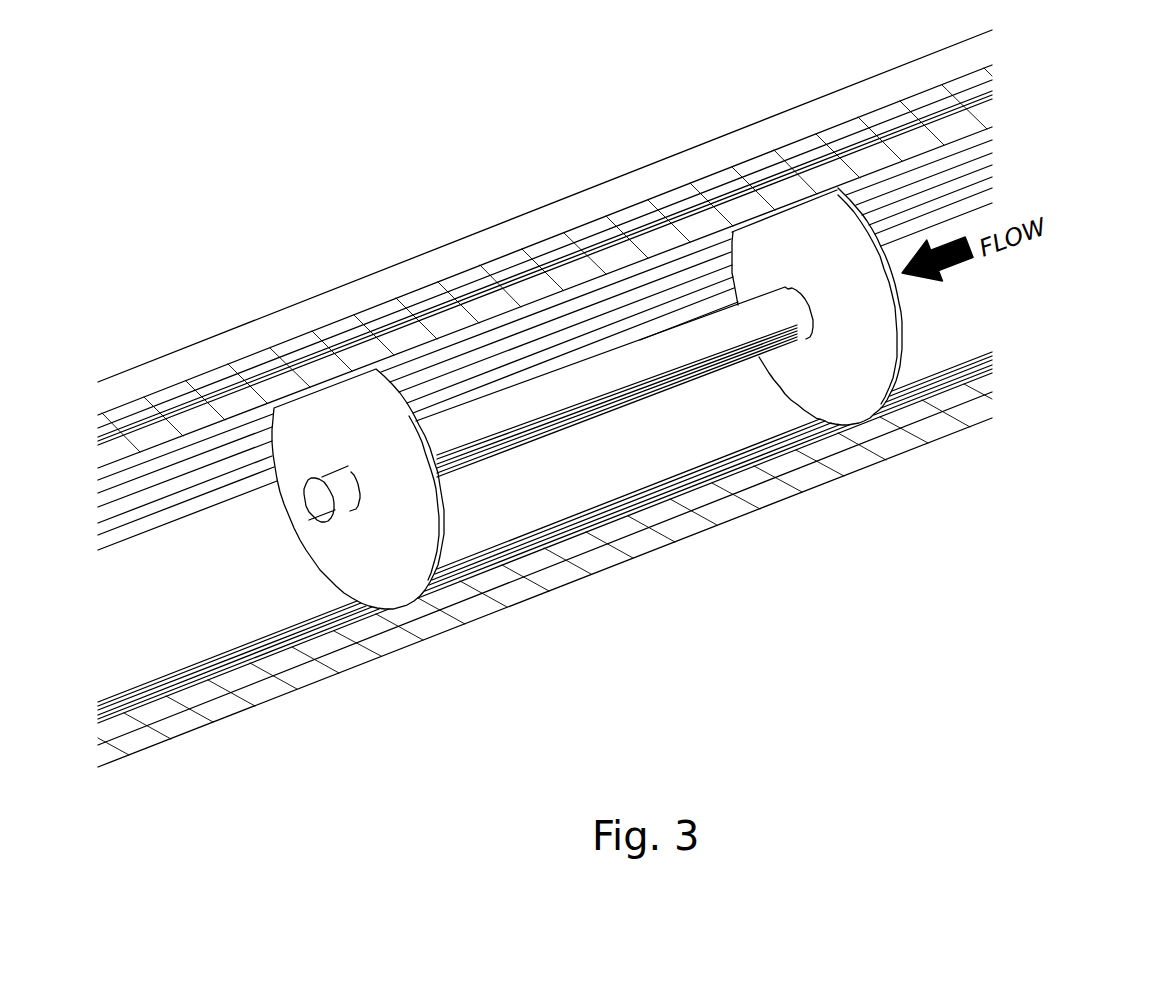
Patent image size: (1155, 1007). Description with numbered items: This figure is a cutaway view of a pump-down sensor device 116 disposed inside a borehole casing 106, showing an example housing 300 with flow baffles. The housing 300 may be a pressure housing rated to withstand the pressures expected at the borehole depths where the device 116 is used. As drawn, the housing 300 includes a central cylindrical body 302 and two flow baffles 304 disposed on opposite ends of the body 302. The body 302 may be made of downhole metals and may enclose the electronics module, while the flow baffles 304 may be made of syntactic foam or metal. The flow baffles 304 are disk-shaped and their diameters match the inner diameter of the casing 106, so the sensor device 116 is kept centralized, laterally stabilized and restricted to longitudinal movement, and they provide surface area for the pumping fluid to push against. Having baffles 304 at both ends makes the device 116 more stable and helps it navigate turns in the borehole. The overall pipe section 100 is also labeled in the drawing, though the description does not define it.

The pipe 100 is at (615, 228).
The borehole casing 106 is at (418, 333).
The pump-down sensor device 116 is at (768, 538).
The housing 300 is at (660, 421).
The central cylindrical body 302 is at (567, 412).
The flow baffles 304 is at (338, 546).